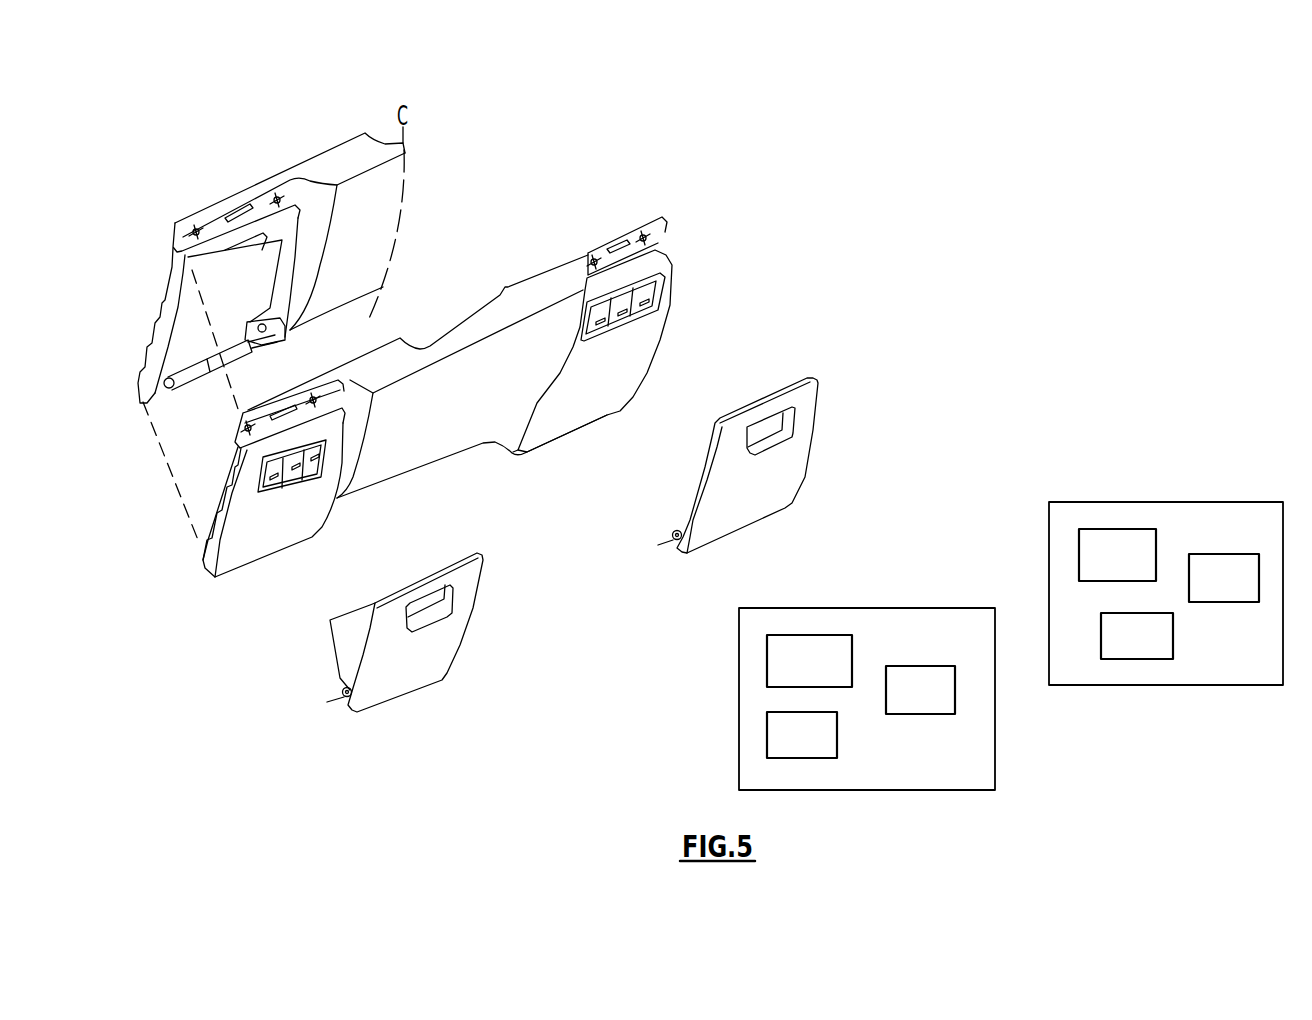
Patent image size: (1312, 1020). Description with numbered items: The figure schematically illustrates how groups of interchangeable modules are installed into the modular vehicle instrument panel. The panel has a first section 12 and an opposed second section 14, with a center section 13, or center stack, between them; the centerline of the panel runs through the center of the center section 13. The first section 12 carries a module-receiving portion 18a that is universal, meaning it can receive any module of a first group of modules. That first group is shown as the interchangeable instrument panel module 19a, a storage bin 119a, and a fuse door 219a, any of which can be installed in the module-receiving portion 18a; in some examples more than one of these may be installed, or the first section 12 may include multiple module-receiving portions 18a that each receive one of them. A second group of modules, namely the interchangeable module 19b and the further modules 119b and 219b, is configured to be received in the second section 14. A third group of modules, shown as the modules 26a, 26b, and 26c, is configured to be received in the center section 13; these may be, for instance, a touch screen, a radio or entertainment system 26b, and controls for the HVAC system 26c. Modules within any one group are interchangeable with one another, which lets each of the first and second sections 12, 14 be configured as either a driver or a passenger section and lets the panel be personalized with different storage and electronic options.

The first section 12 is at (203, 178).
The center section 13 is at (326, 124).
The second section 14 is at (690, 230).
The module-receiving portion 18a is at (178, 290).
The interchangeable instrument panel module 19a is at (265, 537).
The interchangeable instrument panel module 19b is at (630, 372).
The storage bin 119a is at (460, 643).
The module of the second group 119b is at (767, 738).
The fuse door 219a is at (803, 475).
The module of the second group 219b is at (913, 666).
The first storage compartment 26a is at (1110, 529).
The radio or entertainment system module 26b is at (1213, 554).
The HVAC system controls module 26c is at (1142, 660).